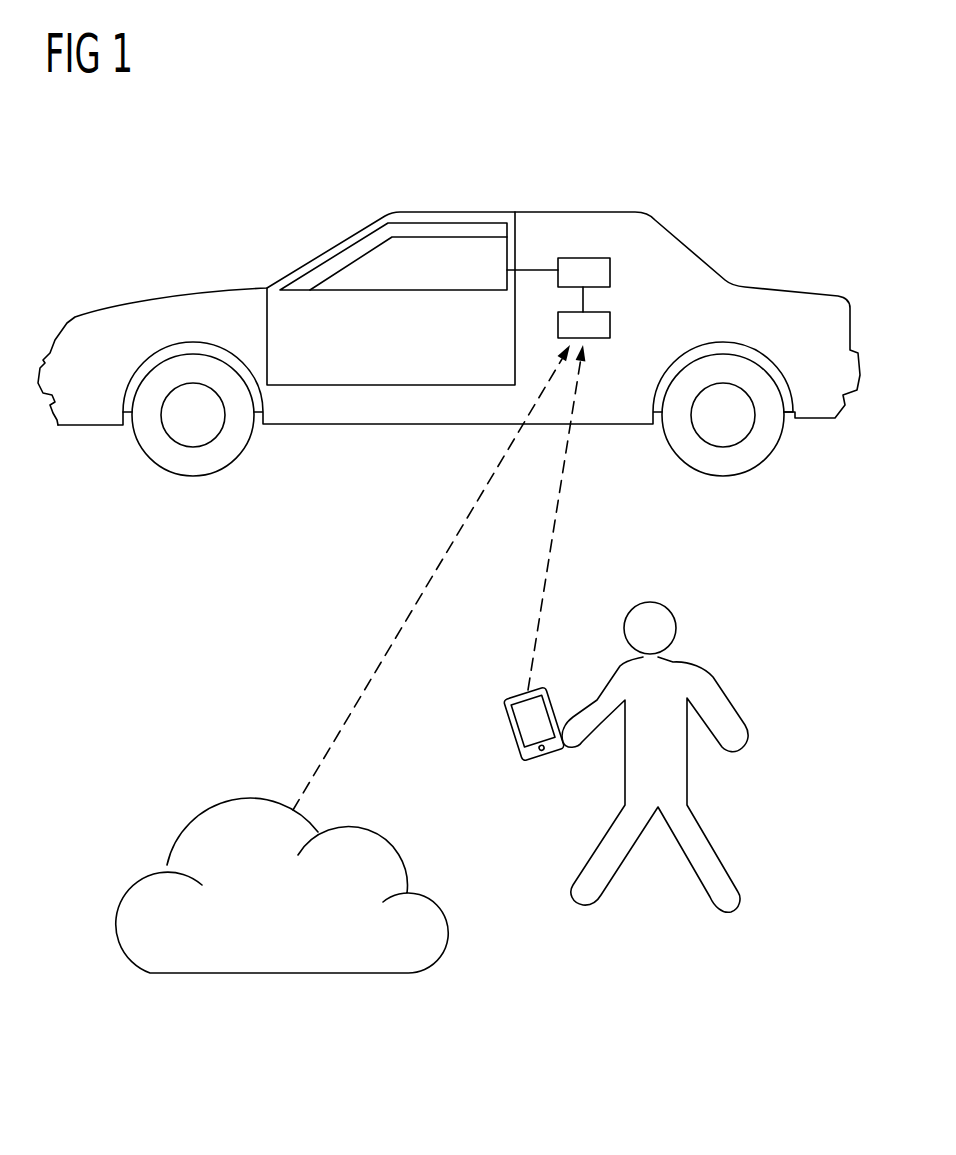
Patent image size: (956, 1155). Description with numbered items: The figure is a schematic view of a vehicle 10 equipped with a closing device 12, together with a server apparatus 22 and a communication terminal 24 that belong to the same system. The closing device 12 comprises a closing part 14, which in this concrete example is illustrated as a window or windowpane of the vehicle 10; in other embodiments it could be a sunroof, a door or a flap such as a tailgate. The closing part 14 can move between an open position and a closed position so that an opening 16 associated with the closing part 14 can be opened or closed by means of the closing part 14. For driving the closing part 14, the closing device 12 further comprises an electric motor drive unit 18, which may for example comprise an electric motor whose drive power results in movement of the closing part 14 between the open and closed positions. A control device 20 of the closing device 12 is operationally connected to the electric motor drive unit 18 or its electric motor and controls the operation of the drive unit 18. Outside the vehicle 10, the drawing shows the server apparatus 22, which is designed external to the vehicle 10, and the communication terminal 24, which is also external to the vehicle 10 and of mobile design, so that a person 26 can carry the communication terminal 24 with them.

The vehicle 10 is at (721, 216).
The closing device 12 is at (585, 200).
The closing part 14 is at (440, 257).
The opening 16 is at (490, 230).
The electric motor drive unit 18 is at (593, 258).
The control device 20 is at (610, 325).
The server apparatus 22 is at (242, 827).
The communication terminal 24 is at (535, 727).
The person 26 is at (660, 630).